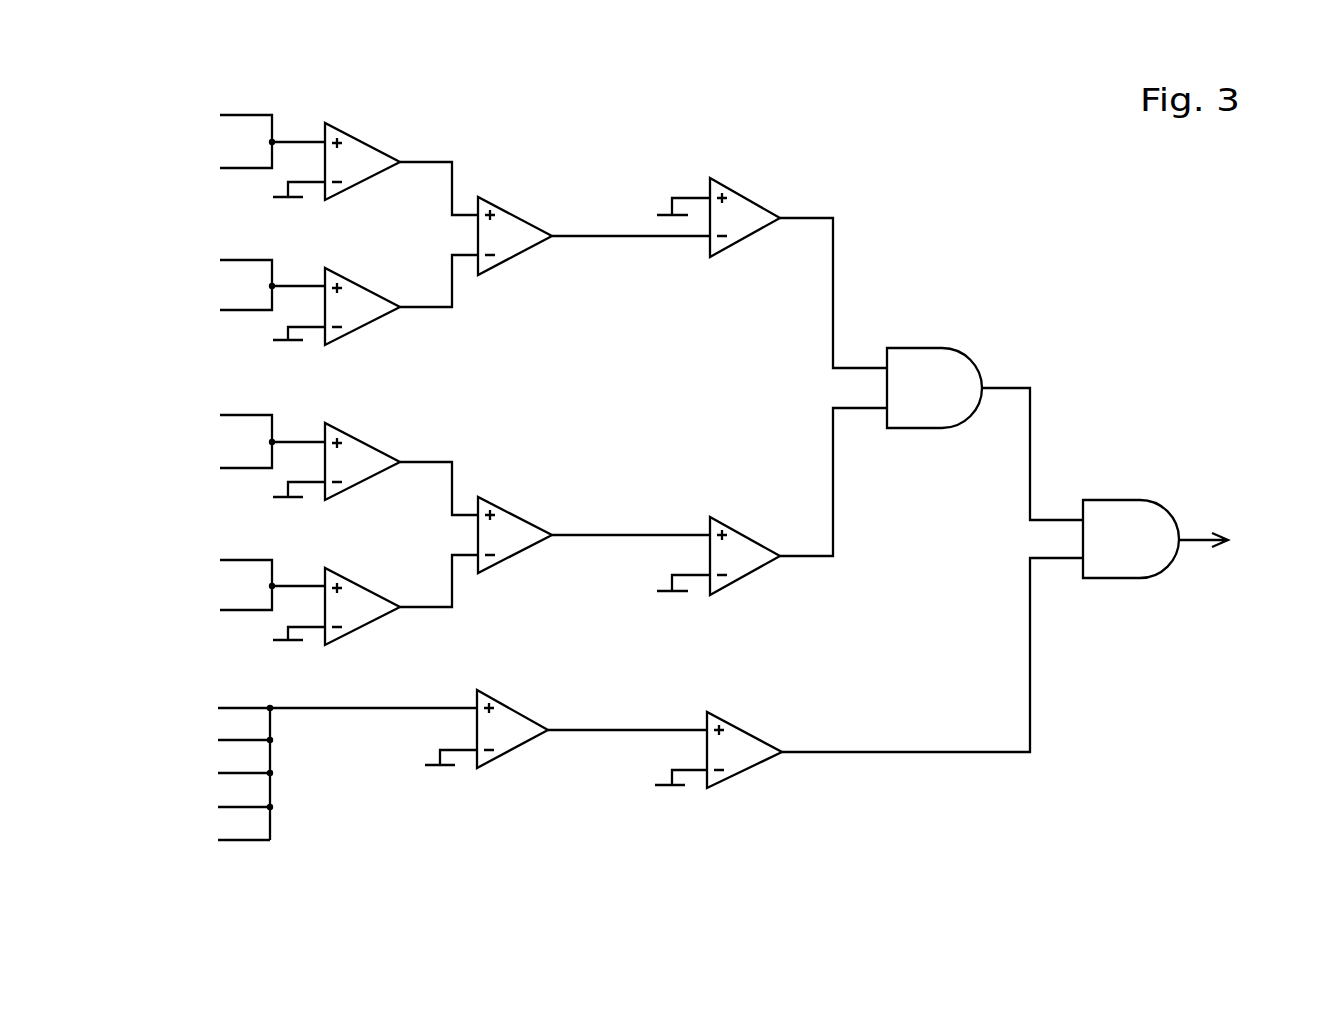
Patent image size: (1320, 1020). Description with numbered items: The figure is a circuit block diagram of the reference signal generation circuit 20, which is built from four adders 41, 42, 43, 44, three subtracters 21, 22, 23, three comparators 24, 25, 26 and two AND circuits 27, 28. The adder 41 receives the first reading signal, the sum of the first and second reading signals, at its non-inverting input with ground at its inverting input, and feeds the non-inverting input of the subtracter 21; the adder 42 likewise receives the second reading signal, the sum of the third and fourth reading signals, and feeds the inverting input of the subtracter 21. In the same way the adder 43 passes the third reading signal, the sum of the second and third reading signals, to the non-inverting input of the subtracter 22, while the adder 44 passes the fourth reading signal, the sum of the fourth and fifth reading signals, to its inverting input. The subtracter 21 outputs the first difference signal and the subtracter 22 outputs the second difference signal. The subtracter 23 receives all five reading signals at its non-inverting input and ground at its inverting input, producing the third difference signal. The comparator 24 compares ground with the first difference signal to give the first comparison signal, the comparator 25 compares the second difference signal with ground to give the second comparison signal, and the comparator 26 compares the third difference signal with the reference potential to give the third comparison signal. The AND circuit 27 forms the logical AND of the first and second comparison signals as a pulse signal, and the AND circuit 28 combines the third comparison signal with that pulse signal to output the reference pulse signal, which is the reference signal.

The reference signal generation circuit 20 is at (748, 47).
The subtracter 21 is at (515, 212).
The subtracter 22 is at (515, 510).
The subtracter 23 is at (510, 707).
The comparator 24 is at (745, 192).
The comparator 25 is at (745, 530).
The comparator 26 is at (742, 725).
The AND circuit 27 is at (928, 348).
The AND circuit 28 is at (1127, 500).
The adder 41 is at (365, 143).
The adder 42 is at (365, 287).
The adder 43 is at (365, 443).
The adder 44 is at (365, 587).